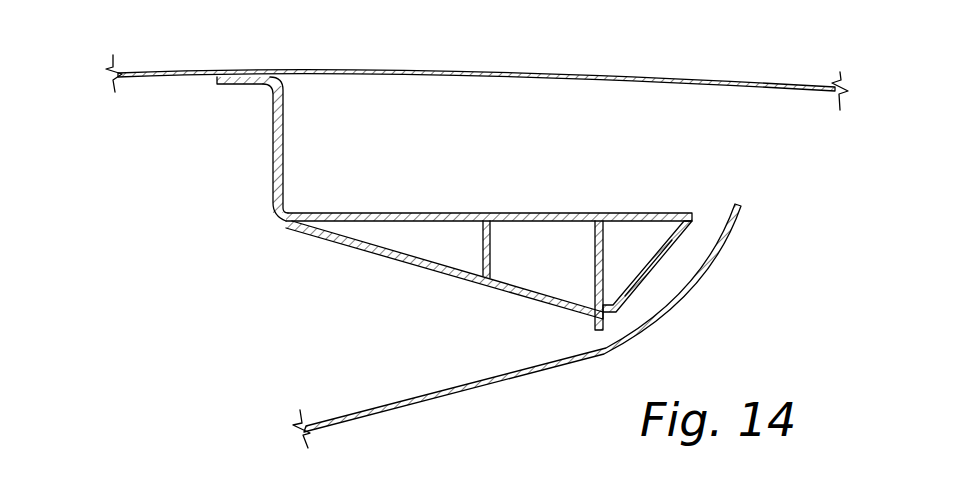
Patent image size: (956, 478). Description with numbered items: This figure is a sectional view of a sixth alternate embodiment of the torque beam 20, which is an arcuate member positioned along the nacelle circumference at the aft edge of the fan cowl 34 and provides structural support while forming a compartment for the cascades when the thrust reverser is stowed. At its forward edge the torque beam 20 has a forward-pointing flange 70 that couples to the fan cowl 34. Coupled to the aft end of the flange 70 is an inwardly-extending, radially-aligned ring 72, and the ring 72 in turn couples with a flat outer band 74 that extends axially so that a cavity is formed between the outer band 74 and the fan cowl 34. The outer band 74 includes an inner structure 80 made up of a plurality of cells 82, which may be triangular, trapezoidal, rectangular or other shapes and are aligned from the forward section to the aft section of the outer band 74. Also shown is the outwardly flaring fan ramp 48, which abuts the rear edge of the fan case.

The torque beam 20 is at (140, 193).
The fan cowl 34 is at (448, 72).
The fan ramp 48 is at (698, 287).
The forward-pointing flange 70 is at (248, 82).
The ring 72 is at (282, 123).
The flat outer band 74 is at (434, 213).
The inner structure 80 is at (597, 176).
The cells 82 is at (433, 242).